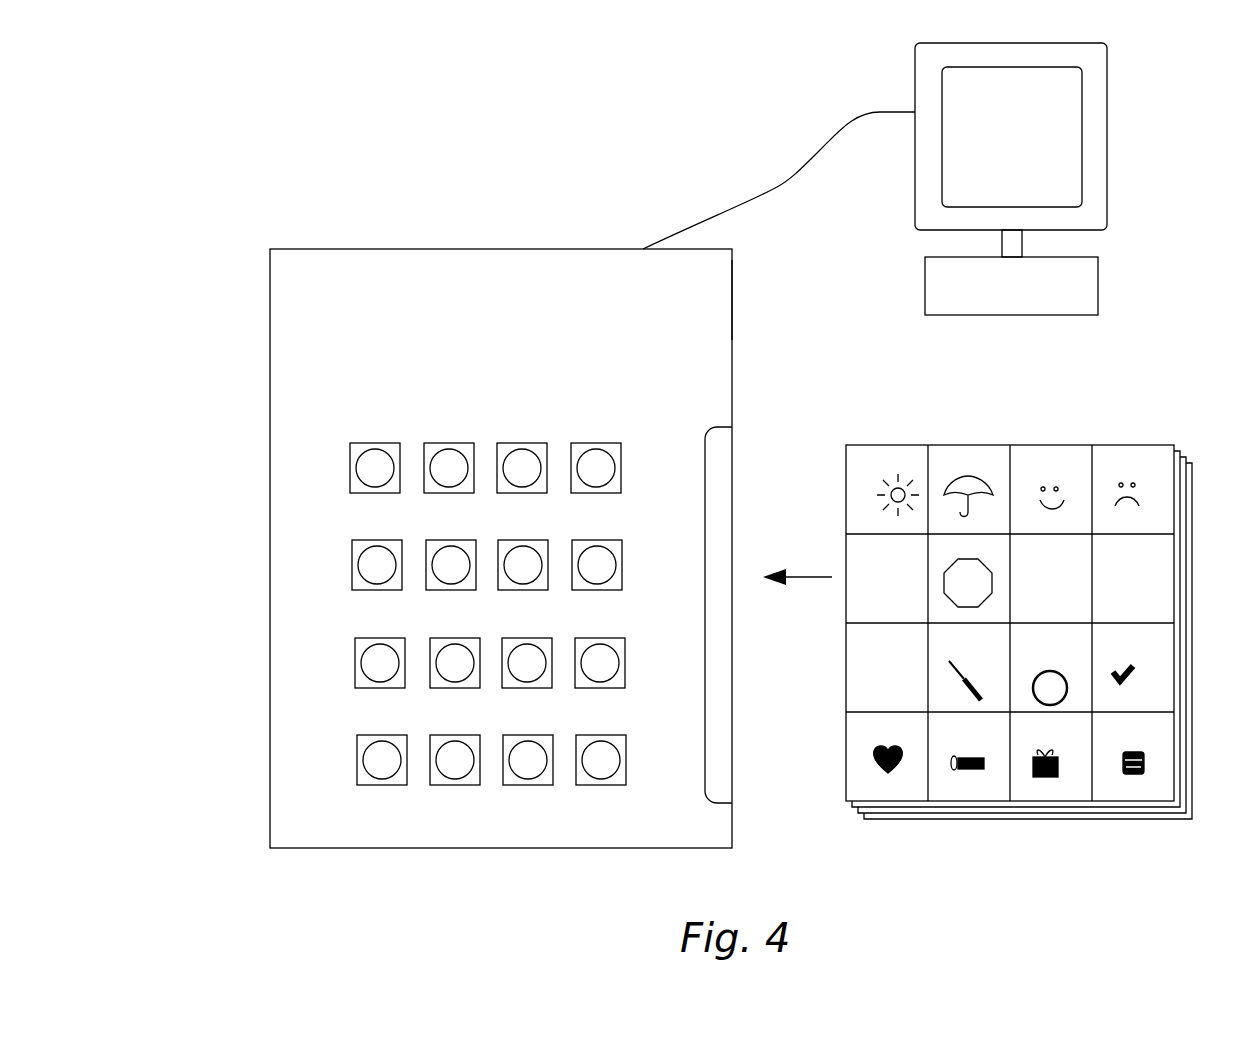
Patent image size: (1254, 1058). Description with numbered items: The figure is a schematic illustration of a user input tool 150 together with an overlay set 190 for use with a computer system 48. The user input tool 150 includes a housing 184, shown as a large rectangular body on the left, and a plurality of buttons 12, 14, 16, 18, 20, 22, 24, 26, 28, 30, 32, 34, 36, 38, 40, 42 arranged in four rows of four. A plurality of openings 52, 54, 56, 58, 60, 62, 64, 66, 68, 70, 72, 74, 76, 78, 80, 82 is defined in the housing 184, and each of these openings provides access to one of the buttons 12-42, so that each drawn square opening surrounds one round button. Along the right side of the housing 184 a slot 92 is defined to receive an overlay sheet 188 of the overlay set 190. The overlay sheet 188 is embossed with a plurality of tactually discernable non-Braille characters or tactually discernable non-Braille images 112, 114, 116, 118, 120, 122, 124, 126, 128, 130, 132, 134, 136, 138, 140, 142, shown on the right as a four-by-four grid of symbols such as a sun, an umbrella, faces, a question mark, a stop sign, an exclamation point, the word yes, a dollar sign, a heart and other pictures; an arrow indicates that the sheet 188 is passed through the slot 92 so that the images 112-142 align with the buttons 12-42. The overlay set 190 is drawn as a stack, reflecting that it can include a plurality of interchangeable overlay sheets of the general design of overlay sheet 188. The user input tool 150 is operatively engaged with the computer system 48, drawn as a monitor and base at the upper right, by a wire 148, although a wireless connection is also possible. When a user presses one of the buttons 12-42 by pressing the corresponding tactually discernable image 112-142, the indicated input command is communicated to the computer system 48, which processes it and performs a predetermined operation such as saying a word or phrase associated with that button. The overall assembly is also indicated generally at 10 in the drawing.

The communication device 10 is at (363, 196).
The button 12 is at (366, 476).
The button 14 is at (440, 476).
The button 16 is at (513, 476).
The button 18 is at (587, 476).
The button 20 is at (368, 573).
The button 22 is at (442, 573).
The button 24 is at (514, 573).
The button 26 is at (588, 573).
The button 28 is at (371, 671).
The button 30 is at (446, 671).
The button 32 is at (518, 671).
The button 34 is at (591, 671).
The button 36 is at (373, 768).
The button 38 is at (446, 768).
The button 40 is at (519, 768).
The button 42 is at (592, 768).
The opening 52 is at (363, 443).
The opening 54 is at (437, 443).
The opening 56 is at (510, 443).
The opening 58 is at (584, 443).
The opening 60 is at (365, 540).
The opening 62 is at (439, 540).
The opening 64 is at (511, 540).
The opening 66 is at (585, 540).
The opening 68 is at (368, 638).
The opening 70 is at (443, 638).
The opening 72 is at (515, 638).
The opening 74 is at (588, 638).
The opening 76 is at (370, 735).
The opening 78 is at (443, 735).
The opening 80 is at (516, 735).
The opening 82 is at (589, 735).
The slot 92 is at (715, 787).
The computer system 48 is at (1108, 88).
The wire 148 is at (788, 173).
The user input tool 150 is at (703, 293).
The housing 184 is at (280, 352).
The overlay sheet 188 is at (1124, 410).
The overlay set 190 is at (1047, 825).
The tactually discernable non-Braille image 112 is at (879, 466).
The tactually discernable non-Braille image 114 is at (961, 466).
The tactually discernable non-Braille image 116 is at (1043, 466).
The tactually discernable non-Braille image 118 is at (1125, 466).
The tactually discernable non-Braille image 120 is at (879, 555).
The tactually discernable non-Braille image 122 is at (961, 555).
The tactually discernable non-Braille image 124 is at (1043, 555).
The tactually discernable non-Braille image 126 is at (1125, 555).
The tactually discernable non-Braille image 128 is at (879, 644).
The tactually discernable non-Braille image 130 is at (961, 644).
The tactually discernable non-Braille image 132 is at (1043, 644).
The tactually discernable non-Braille image 134 is at (1125, 644).
The tactually discernable non-Braille image 136 is at (879, 733).
The tactually discernable non-Braille image 138 is at (961, 733).
The tactually discernable non-Braille image 140 is at (1043, 733).
The tactually discernable non-Braille image 142 is at (1125, 733).